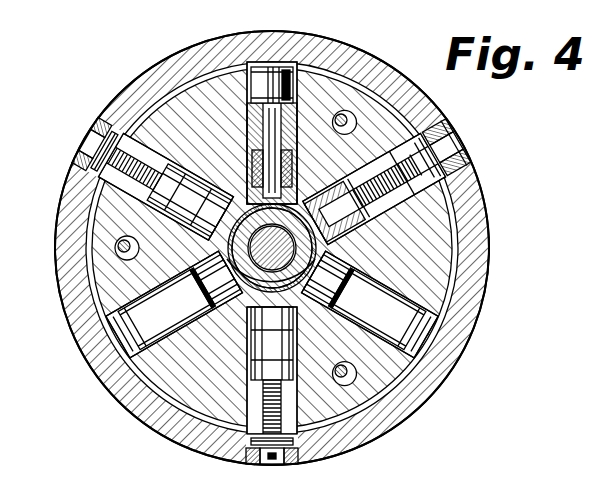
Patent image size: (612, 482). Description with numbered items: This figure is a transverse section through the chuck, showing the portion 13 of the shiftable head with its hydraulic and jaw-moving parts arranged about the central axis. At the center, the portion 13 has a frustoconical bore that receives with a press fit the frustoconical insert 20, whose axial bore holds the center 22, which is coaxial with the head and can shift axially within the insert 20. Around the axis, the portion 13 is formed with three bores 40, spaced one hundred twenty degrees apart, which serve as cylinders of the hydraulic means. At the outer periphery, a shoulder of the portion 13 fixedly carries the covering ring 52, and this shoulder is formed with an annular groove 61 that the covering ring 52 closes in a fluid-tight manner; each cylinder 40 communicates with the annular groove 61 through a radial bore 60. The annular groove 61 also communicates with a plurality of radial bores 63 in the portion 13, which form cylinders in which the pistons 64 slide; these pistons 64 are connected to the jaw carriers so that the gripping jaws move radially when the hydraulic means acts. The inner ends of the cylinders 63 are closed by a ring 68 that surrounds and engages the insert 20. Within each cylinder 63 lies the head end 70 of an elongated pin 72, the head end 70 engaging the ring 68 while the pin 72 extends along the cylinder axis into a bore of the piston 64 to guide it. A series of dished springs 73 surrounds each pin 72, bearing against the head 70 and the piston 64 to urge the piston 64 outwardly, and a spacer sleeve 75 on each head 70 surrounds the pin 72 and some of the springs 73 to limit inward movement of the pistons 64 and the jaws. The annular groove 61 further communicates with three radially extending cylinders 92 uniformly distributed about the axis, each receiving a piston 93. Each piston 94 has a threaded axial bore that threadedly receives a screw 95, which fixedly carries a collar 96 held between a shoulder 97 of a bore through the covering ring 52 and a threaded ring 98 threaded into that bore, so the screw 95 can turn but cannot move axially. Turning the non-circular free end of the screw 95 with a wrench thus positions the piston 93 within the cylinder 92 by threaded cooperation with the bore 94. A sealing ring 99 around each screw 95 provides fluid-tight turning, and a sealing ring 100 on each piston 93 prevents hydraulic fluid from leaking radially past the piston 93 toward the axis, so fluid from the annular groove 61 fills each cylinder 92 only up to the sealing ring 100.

The portion of the shiftable head 13 is at (458, 232).
The frustoconical insert 20 is at (320, 300).
The center 22 is at (348, 195).
The bores 40 is at (357, 122).
The covering ring 52 is at (373, 62).
The radial bore 60 is at (383, 433).
The annular groove 61 is at (366, 452).
The radial bores (cylinders) 63 is at (303, 47).
The pistons 64 is at (253, 63).
The ring 68 is at (232, 258).
The head end of pin 70 is at (326, 195).
The elongated pin 72 is at (243, 133).
The dished springs 73 is at (262, 160).
The spacer sleeve 75 is at (250, 175).
The cylinders 92 is at (427, 180).
The pistons 93 is at (372, 224).
The threaded axial bore of piston 94 is at (378, 176).
The screw 95 is at (398, 158).
The collar 96 is at (452, 146).
The shoulder 97 is at (441, 126).
The threaded ring 98 is at (485, 147).
The sealing ring 99 is at (434, 118).
The sealing ring 100 is at (400, 208).